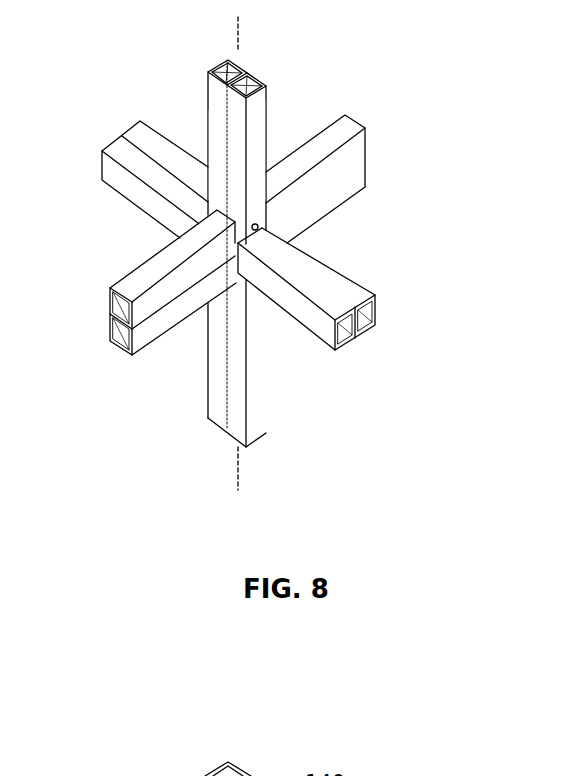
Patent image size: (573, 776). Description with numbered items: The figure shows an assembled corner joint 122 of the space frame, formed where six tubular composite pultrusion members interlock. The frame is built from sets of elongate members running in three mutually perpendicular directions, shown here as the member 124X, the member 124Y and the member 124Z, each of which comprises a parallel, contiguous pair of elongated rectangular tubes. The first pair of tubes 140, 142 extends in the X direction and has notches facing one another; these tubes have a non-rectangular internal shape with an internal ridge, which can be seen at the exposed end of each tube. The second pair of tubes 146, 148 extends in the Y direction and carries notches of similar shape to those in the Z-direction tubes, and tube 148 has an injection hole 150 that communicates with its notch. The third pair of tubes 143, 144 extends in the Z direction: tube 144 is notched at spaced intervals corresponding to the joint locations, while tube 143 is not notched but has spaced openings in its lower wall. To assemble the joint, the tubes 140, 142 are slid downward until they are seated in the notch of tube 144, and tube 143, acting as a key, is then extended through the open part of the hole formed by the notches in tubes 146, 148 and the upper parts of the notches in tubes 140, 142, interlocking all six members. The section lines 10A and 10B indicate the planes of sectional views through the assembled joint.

The section line 10A is at (238, 50).
The section line 10B is at (238, 17).
The corner joint 122 is at (287, 131).
The X-direction member 124X is at (288, 330).
The Y-direction member 124Y is at (203, 380).
The Z-direction member 124Z is at (138, 280).
The first tube 140 is at (324, 340).
The first tube 142 is at (358, 296).
The third tube 143 is at (353, 150).
The third tube 144 is at (347, 190).
The second tube 146 is at (218, 102).
The second tube 148 is at (265, 97).
The injection hole 150 is at (261, 226).